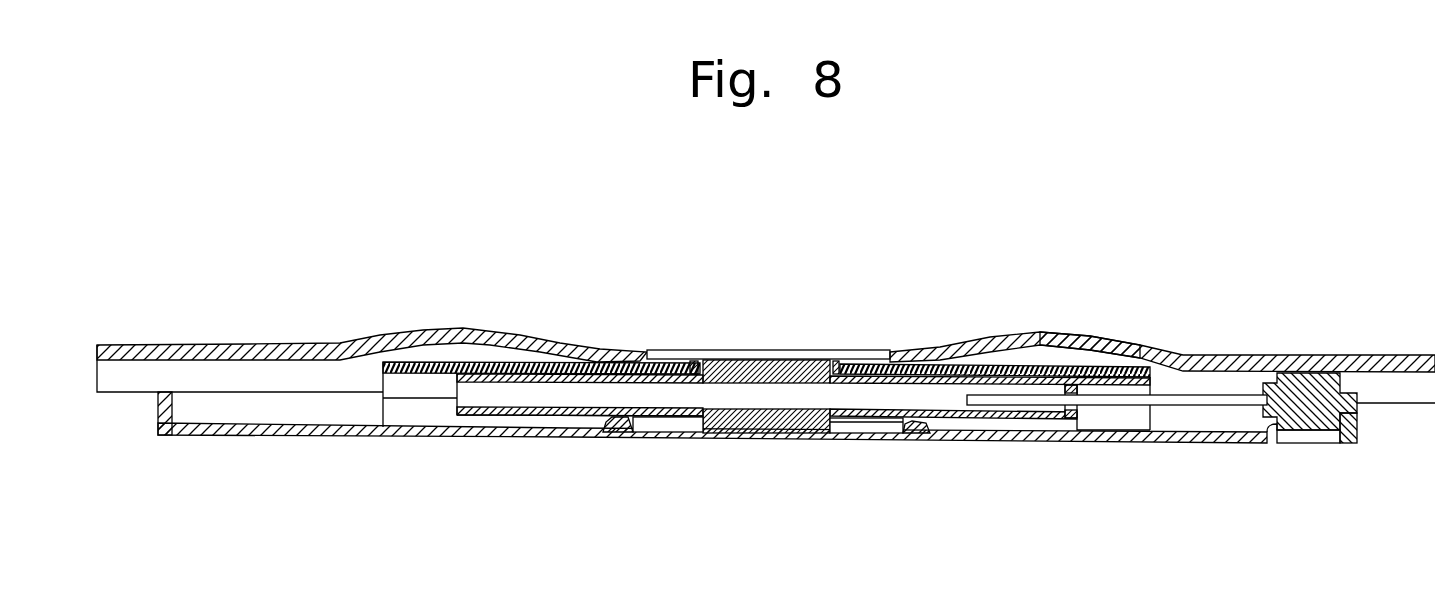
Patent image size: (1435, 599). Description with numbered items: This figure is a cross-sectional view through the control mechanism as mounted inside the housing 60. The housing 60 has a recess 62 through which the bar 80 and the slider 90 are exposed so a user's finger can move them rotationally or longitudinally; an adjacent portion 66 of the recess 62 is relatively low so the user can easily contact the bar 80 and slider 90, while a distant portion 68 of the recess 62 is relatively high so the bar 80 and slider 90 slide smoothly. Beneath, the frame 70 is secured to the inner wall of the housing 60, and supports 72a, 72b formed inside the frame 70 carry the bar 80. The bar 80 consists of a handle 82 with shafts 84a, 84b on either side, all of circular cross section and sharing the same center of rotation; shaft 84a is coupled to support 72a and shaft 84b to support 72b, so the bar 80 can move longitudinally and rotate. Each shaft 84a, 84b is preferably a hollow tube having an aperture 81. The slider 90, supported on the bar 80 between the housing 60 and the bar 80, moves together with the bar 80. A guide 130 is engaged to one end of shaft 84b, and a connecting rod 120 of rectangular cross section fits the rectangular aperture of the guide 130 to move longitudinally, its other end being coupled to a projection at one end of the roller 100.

The housing 60 is at (228, 340).
The recess 62 is at (737, 351).
The adjacent portion of the recess 66 is at (983, 345).
The distant portion of the recess 68 is at (1087, 332).
The frame 70 is at (300, 438).
The support 72a is at (627, 418).
The support 72b is at (915, 427).
The bar 80 is at (508, 417).
The aperture 81 is at (868, 400).
The handle 82 is at (803, 361).
The shaft 84a is at (600, 357).
The shaft 84b is at (903, 361).
The slider 90 is at (432, 362).
The roller 100 is at (1310, 430).
The connecting rod 120 is at (1188, 406).
The guide 130 is at (1067, 420).